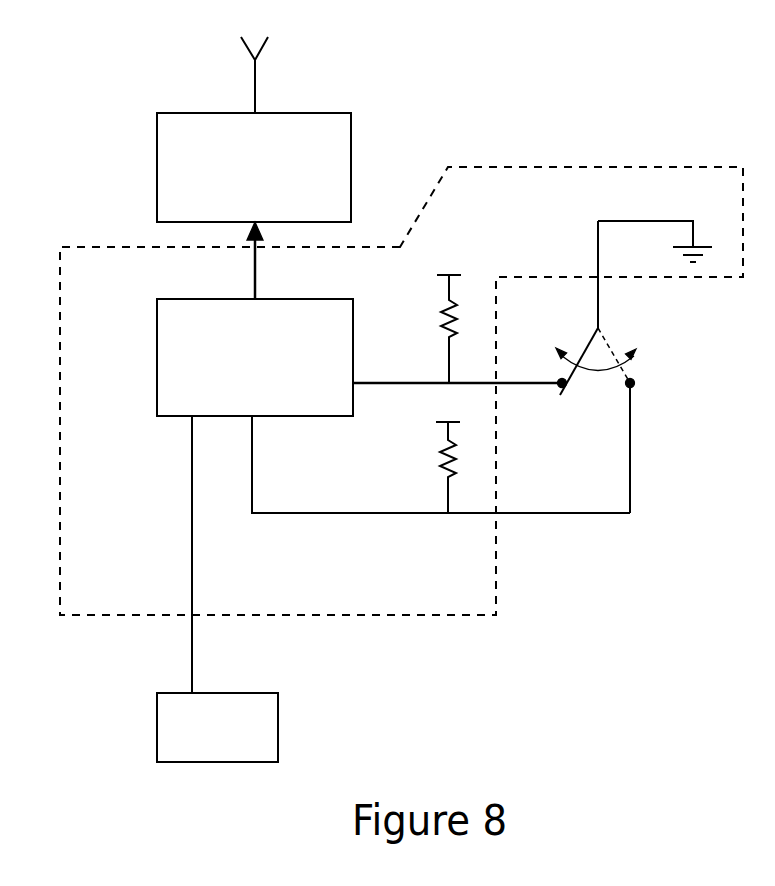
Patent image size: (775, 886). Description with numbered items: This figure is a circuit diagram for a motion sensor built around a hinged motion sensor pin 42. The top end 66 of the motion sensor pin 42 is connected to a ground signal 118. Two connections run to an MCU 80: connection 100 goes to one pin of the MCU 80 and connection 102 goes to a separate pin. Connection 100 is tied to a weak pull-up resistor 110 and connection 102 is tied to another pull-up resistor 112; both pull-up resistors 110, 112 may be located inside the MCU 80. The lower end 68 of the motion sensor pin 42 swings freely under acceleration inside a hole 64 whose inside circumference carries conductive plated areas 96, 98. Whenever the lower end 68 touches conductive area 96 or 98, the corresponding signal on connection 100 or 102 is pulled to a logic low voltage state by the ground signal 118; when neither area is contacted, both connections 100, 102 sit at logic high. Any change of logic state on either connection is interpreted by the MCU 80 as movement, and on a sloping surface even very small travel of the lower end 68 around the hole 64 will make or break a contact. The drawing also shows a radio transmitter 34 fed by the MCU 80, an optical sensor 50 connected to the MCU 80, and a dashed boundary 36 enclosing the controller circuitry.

The radio transmitter 34 is at (352, 127).
The controller 36 is at (380, 616).
The motion sensor pin 42 is at (660, 333).
The optical sensor 50 is at (165, 692).
The hole 64 is at (608, 390).
The top end 66 is at (599, 293).
The lower end 68 is at (575, 380).
The MCU 80 is at (157, 312).
The conductive area 96 is at (557, 380).
The conductive area 98 is at (636, 382).
The connection 100 is at (400, 383).
The connection 102 is at (255, 450).
The pull-up resistor 110 is at (446, 302).
The pull-up resistor 112 is at (447, 460).
The ground signal 118 is at (638, 221).